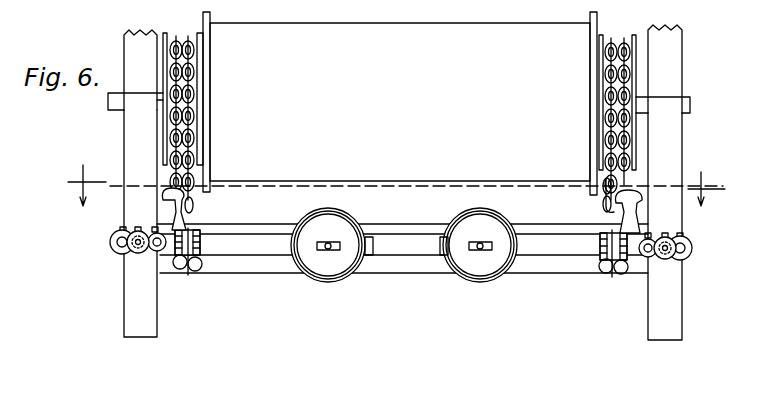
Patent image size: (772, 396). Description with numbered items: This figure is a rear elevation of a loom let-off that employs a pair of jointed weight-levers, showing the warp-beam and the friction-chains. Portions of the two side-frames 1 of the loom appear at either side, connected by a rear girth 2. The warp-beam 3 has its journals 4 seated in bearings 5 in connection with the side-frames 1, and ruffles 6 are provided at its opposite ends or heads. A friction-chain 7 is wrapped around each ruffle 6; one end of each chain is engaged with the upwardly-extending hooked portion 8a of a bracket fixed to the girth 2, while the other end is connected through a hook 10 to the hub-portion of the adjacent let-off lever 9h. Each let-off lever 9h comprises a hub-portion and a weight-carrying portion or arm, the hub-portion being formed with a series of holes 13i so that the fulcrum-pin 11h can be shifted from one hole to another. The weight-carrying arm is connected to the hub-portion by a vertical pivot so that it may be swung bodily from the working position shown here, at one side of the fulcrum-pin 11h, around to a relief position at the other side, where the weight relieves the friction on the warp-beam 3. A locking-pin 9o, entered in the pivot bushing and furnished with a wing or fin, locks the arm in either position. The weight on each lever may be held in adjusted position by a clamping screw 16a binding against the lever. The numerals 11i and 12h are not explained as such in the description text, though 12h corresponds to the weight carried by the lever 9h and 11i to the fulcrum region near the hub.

The side-frame 1 is at (123, 308).
The rear girth 2 is at (403, 275).
The warp-beam 3 is at (598, 22).
The journal 4 is at (107, 107).
The bearing 5 is at (125, 128).
The ruffle 6 is at (192, 58).
The friction-chain 7 is at (197, 115).
The hooked portion 8a is at (689, 221).
The locking-pin 9o is at (610, 277).
The let-off lever 9h is at (563, 252).
The hook 10 is at (197, 212).
The roller pin 11i is at (118, 235).
The fulcrum-pin 11h is at (698, 302).
The wheel 12h is at (483, 282).
The hole 13i is at (707, 277).
The clamping screw 16a is at (337, 242).